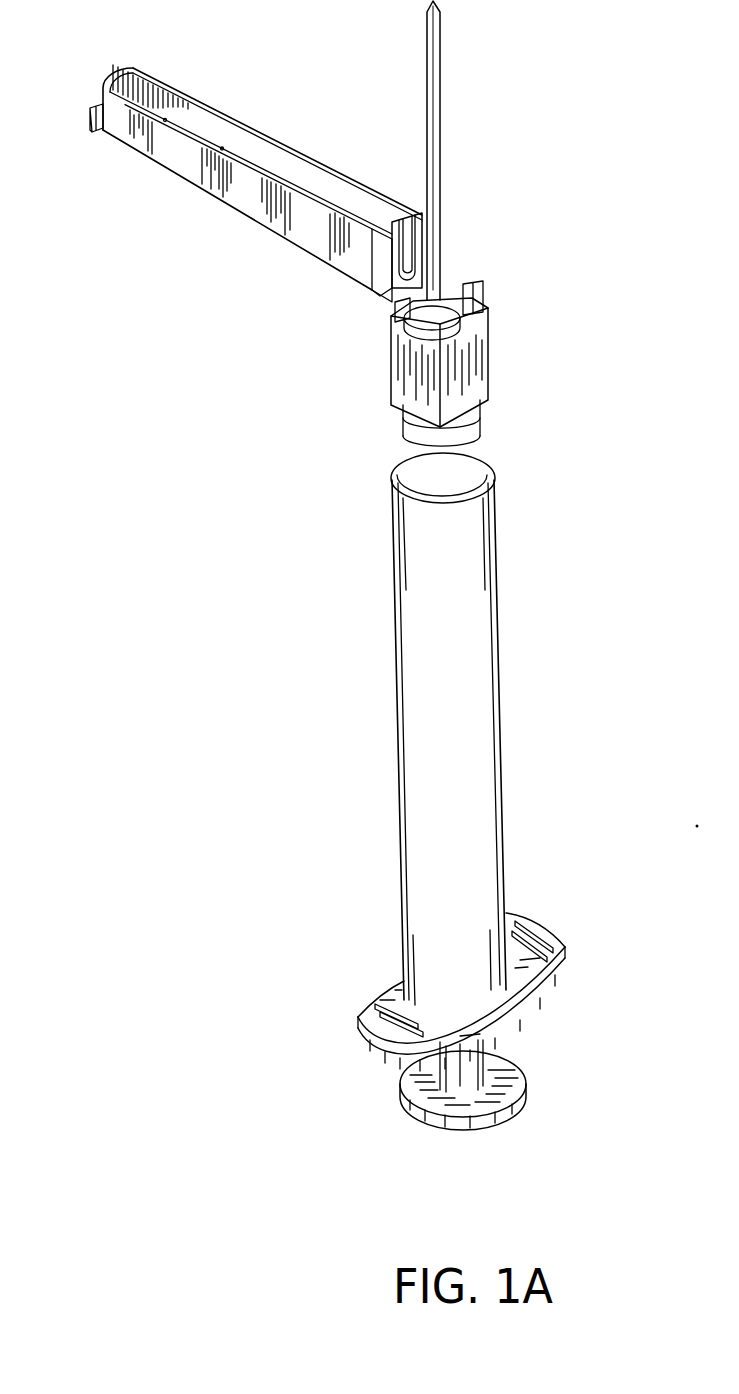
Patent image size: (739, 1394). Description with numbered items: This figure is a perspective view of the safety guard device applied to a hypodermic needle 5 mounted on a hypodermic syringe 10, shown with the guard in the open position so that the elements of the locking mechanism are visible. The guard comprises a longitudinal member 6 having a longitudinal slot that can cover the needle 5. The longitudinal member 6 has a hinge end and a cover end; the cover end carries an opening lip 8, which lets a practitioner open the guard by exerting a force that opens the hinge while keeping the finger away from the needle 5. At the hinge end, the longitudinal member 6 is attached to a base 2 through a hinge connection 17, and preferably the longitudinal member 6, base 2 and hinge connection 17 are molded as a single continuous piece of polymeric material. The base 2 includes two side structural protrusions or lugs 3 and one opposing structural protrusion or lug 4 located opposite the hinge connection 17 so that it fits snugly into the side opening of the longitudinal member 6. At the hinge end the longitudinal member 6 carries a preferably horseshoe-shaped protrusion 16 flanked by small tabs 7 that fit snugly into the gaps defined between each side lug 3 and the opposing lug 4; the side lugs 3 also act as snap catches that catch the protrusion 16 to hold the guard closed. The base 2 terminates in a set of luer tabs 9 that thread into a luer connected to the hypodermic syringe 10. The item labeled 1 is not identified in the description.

The syringe 1 is at (457, 470).
The base 2 is at (473, 377).
The side structural protrusions or lugs 3 is at (483, 292).
The opposing structural protrusion or lug 4 is at (492, 337).
The needle 5 is at (441, 135).
The longitudinal member 6 is at (222, 111).
The small tabs 7 is at (421, 213).
The opening lip 8 is at (92, 128).
The luer tabs 9 is at (450, 434).
The hypodermic syringe 10 is at (503, 643).
The protrusion 16 is at (362, 303).
The hinge connection 17 is at (375, 326).